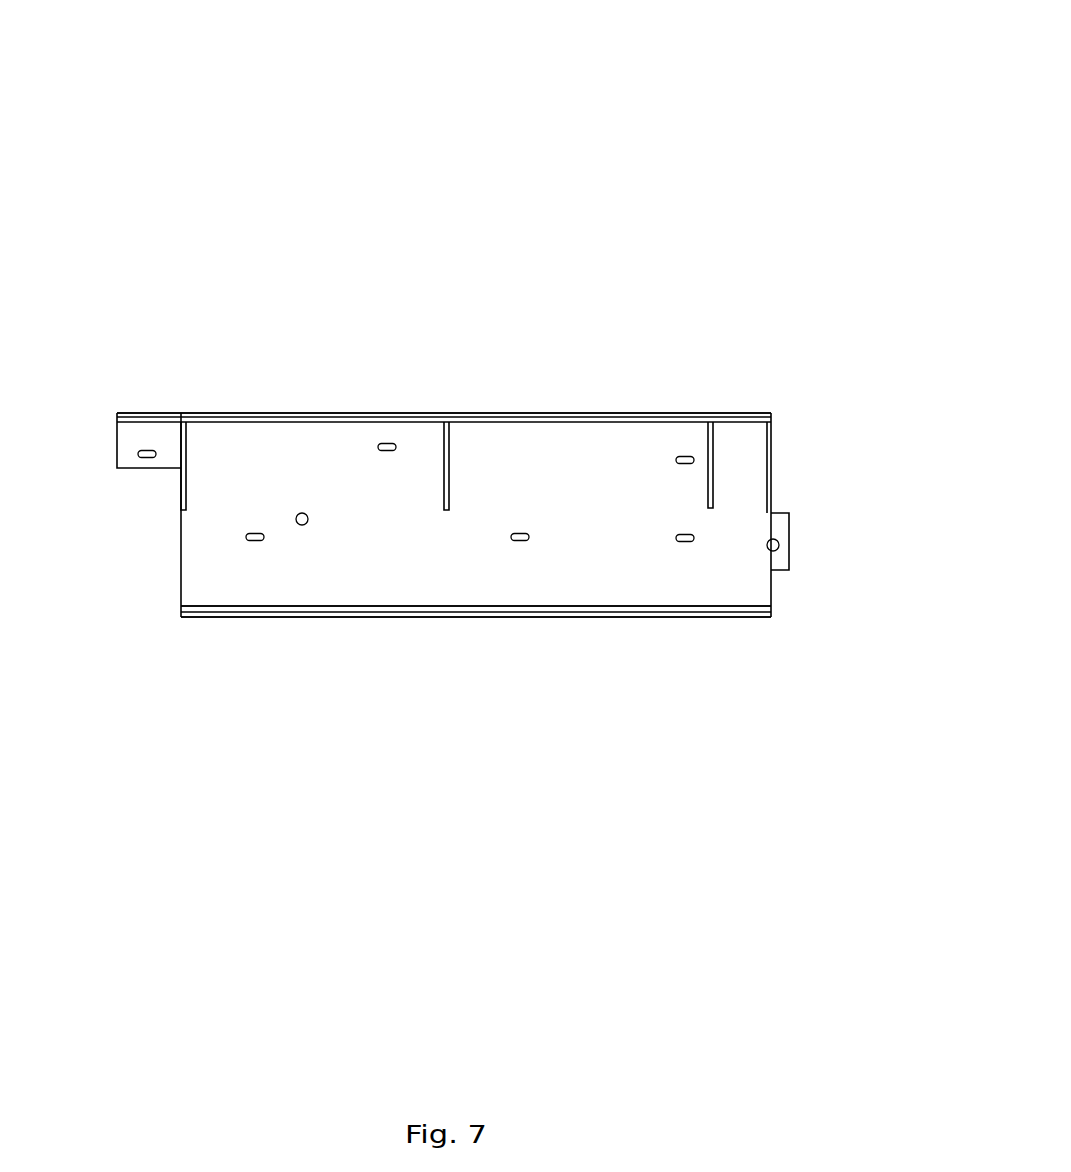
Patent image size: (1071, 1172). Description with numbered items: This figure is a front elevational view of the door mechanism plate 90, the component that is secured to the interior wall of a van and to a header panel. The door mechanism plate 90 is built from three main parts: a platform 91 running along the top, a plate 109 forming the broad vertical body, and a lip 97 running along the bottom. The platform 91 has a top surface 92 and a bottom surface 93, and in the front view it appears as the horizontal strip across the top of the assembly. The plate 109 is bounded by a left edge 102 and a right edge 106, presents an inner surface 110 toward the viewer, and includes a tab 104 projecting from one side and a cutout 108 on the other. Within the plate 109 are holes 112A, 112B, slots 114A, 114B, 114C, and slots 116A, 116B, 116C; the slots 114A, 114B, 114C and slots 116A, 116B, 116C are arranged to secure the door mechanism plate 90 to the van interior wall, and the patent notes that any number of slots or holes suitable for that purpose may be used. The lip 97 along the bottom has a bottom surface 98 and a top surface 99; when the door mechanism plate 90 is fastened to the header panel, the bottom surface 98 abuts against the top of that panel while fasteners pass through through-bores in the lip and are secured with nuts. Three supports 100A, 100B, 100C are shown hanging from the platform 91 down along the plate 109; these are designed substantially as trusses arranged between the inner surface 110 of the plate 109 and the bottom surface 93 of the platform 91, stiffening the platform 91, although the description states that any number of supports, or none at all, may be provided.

The door mechanism plate 90 is at (688, 68).
The platform 91 is at (598, 413).
The top surface 92 is at (552, 413).
The bottom surface 93 is at (532, 422).
The lip 97 is at (360, 612).
The bottom surface 98 is at (480, 617).
The top surface 99 is at (525, 608).
The support 100A is at (187, 445).
The support 100B is at (443, 435).
The support 100C is at (713, 445).
The left edge 102 is at (772, 465).
The tab 104 is at (790, 540).
The right edge 106 is at (117, 443).
The cutout 108 is at (145, 515).
The plate 109 is at (255, 570).
The inner surface 110 is at (412, 590).
The hole 112A is at (302, 513).
The hole 112B is at (767, 545).
The slot 114A is at (253, 533).
The slot 114B is at (520, 533).
The slot 114C is at (685, 542).
The slot 116A is at (147, 447).
The slot 116B is at (387, 452).
The slot 116C is at (685, 464).